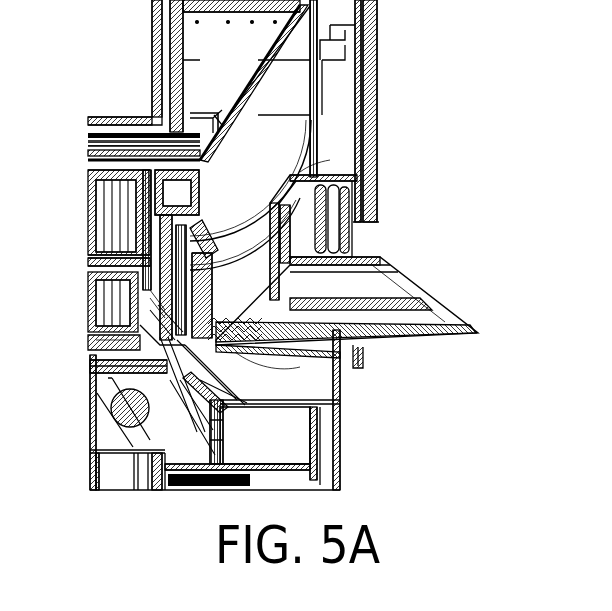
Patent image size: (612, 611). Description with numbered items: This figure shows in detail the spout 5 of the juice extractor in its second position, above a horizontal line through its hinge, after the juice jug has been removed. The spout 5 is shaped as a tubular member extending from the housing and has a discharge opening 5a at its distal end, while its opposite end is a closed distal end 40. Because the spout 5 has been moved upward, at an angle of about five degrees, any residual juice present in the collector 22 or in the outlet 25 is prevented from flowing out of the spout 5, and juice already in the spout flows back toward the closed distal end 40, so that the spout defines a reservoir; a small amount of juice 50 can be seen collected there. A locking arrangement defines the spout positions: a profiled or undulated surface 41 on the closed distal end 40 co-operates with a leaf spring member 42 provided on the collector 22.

The collector 22 is at (315, 88).
The outlet 25 is at (243, 278).
The spout 5 is at (370, 258).
The discharge opening 5a is at (423, 277).
The leaf spring member 42 is at (185, 300).
The profiled or undulated surface 41 is at (178, 322).
The closed distal end 40 is at (212, 345).
The juice 50 is at (265, 332).